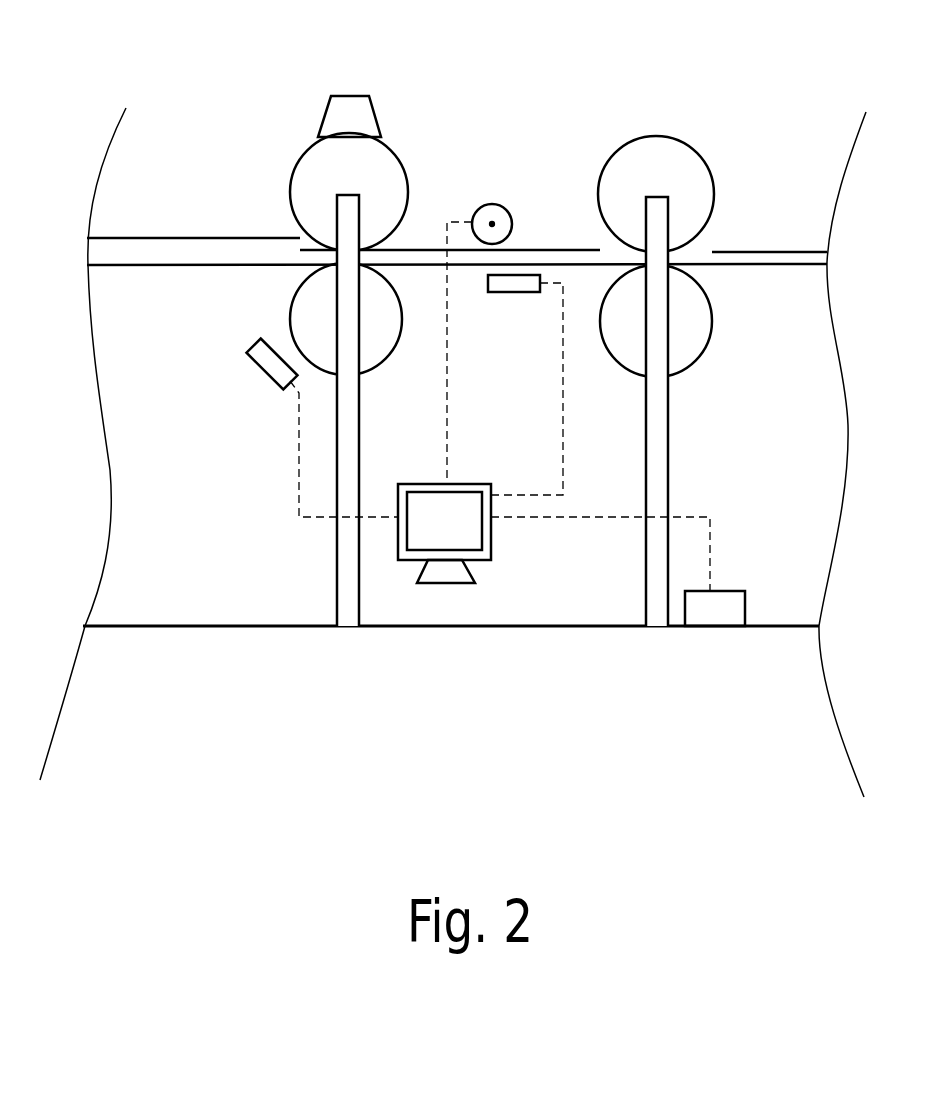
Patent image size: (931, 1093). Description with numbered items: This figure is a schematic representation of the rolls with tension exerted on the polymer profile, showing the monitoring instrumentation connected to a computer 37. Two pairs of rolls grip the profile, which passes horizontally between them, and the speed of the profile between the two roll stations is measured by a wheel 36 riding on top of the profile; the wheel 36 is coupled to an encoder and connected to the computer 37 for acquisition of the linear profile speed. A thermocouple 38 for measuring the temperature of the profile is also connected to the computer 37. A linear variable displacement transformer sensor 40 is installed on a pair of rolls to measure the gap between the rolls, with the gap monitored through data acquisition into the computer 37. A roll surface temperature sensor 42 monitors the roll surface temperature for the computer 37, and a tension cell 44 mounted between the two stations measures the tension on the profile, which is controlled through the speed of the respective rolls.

The wheel 36 is at (488, 203).
The computer 37 is at (475, 542).
The thermocouple 38 is at (520, 284).
The linear variable displacement transformer (LVDT) sensor 40 is at (350, 102).
The roll surface temperature sensor 42 is at (265, 350).
The tension cell 44 is at (732, 600).